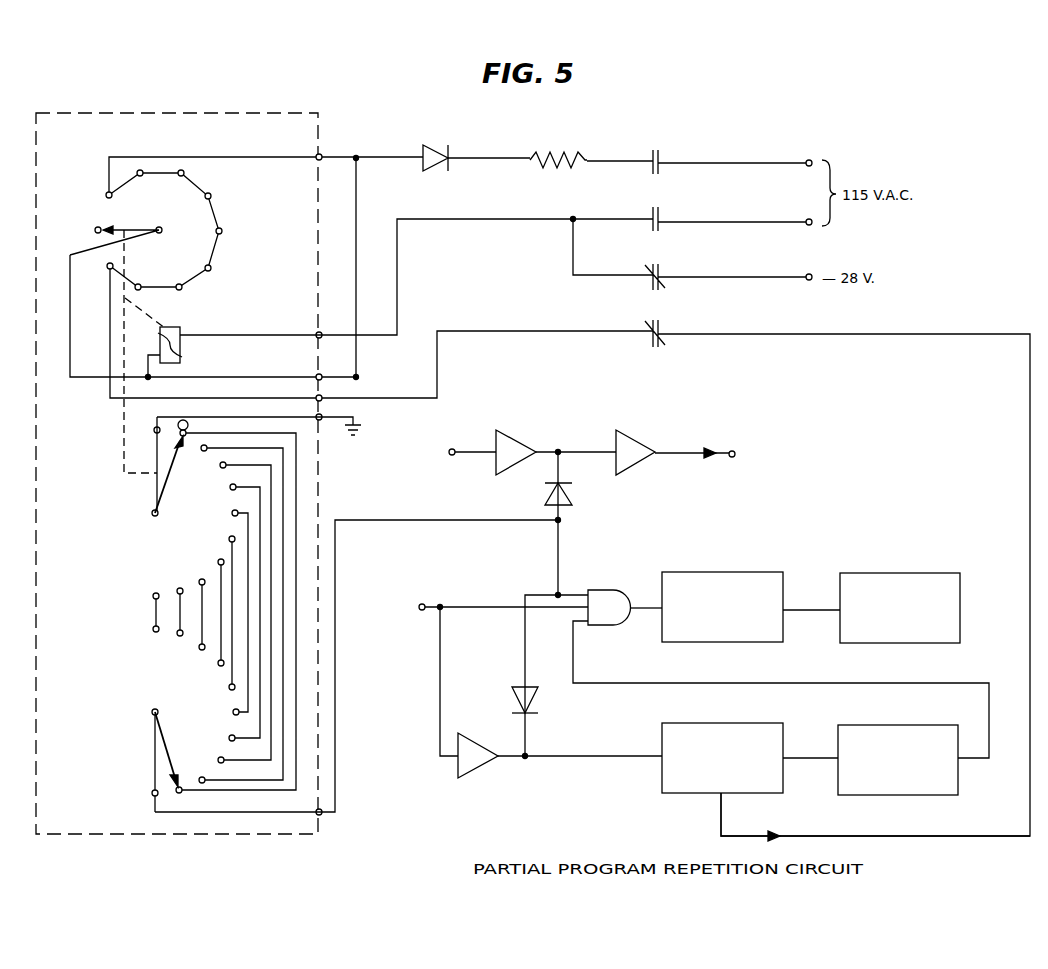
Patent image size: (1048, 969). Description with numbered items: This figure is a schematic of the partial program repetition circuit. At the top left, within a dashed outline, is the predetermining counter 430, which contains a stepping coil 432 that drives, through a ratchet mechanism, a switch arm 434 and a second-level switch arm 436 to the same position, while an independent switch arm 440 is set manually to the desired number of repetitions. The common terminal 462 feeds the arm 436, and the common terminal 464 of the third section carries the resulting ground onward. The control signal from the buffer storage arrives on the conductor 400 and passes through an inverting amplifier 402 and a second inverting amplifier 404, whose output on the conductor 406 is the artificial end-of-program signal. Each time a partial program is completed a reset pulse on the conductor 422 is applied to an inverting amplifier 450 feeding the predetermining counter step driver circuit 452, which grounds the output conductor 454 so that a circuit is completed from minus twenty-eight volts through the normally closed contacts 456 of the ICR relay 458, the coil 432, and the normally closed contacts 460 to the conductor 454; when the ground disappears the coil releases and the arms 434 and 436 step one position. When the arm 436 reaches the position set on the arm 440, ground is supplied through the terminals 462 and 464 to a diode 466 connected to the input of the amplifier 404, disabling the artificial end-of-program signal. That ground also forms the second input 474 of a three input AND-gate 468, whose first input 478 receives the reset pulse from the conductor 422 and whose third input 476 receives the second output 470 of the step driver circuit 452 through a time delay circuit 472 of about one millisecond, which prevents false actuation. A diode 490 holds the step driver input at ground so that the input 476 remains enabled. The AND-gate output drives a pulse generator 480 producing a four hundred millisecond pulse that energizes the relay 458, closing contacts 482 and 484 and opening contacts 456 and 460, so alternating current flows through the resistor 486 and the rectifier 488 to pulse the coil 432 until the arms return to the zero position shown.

The predetermining counter 430 is at (312, 113).
The stepping coil 432 is at (182, 352).
The switch arm 434 is at (130, 228).
The switch arm 436 is at (162, 497).
The switch arm 440 is at (163, 733).
The common terminal 462 is at (153, 429).
The common terminal 464 is at (147, 798).
The diode 466 is at (572, 500).
The three input AND-gate 468 is at (622, 600).
The second input 474 is at (572, 592).
The third input 476 is at (578, 625).
The first input 478 is at (548, 612).
The pulse generator 480 is at (698, 572).
The ICR relay 458 is at (886, 573).
The second output 470 is at (804, 755).
The time delay circuit 472 is at (895, 725).
The predetermining counter step driver circuit 452 is at (687, 794).
The output conductor 454 is at (886, 836).
The inverting amplifier 450 is at (488, 762).
The diode 490 is at (538, 700).
The conductor 422 is at (433, 612).
The conductor 400 is at (472, 446).
The inverting amplifier 402 is at (520, 442).
The second inverting amplifier 404 is at (640, 441).
The conductor 406 is at (688, 456).
The rectifier 488 is at (433, 147).
The resistor 486 is at (560, 153).
The contacts 482 is at (660, 158).
The contacts 484 is at (660, 215).
The normally closed contacts 456 is at (660, 268).
The normally closed contacts 460 is at (648, 322).